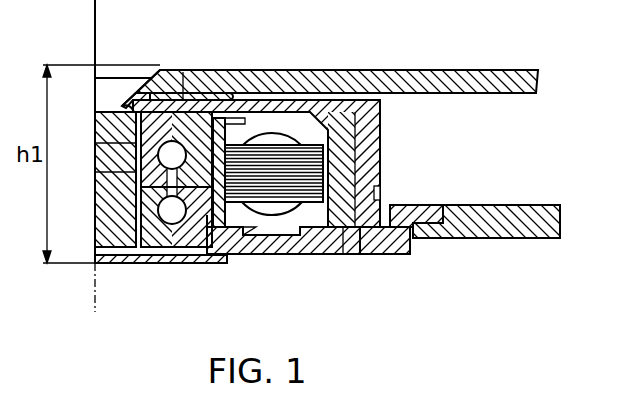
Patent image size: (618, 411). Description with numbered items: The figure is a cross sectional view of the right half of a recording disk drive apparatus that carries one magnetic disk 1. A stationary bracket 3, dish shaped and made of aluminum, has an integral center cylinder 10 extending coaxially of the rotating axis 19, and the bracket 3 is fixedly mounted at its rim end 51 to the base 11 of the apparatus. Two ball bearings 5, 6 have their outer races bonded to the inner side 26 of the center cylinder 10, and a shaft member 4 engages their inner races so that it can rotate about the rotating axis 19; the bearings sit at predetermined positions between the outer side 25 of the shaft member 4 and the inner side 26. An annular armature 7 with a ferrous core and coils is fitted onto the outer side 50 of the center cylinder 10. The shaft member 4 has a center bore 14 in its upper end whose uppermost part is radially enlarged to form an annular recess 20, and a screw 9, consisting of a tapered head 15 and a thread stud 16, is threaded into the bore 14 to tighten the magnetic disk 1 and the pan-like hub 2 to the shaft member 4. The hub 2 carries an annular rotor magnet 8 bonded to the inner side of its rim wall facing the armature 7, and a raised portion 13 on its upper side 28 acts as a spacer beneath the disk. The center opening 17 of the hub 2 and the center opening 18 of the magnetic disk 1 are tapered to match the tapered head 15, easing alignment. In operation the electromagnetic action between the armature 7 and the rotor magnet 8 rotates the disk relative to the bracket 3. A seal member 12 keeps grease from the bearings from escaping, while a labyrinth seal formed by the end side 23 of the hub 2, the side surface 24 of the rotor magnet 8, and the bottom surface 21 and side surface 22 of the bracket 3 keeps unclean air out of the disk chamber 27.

The magnetic disk 1 is at (331, 70).
The hub 2 is at (380, 118).
The bracket 3 is at (365, 258).
The shaft member 4 is at (108, 219).
The ball bearing 5 is at (158, 264).
The ball bearing 6 is at (183, 100).
The armature 7 is at (298, 236).
The rotor magnet 8 is at (325, 143).
The screw 9 is at (100, 78).
The center cylinder 10 is at (220, 226).
The base 11 is at (488, 238).
The seal member 12 is at (214, 248).
The raised portion 13 is at (241, 70).
The center bore 14 is at (110, 171).
The tapered head 15 is at (110, 92).
The thread stud 16 is at (106, 144).
The center opening 17 is at (139, 100).
The center opening 18 is at (153, 70).
The rotating axis 19 is at (95, 298).
The annular recess 20 is at (123, 110).
The bottom surface 21 is at (373, 254).
The side surface 22 is at (407, 238).
The end side 23 is at (381, 193).
The side surface 24 is at (343, 227).
The outer side 25 is at (128, 256).
The inner side 26 is at (214, 120).
The disk chamber 27 is at (473, 39).
The upper side 28 is at (205, 68).
The outer side 50 is at (251, 228).
The rim end 51 is at (432, 205).